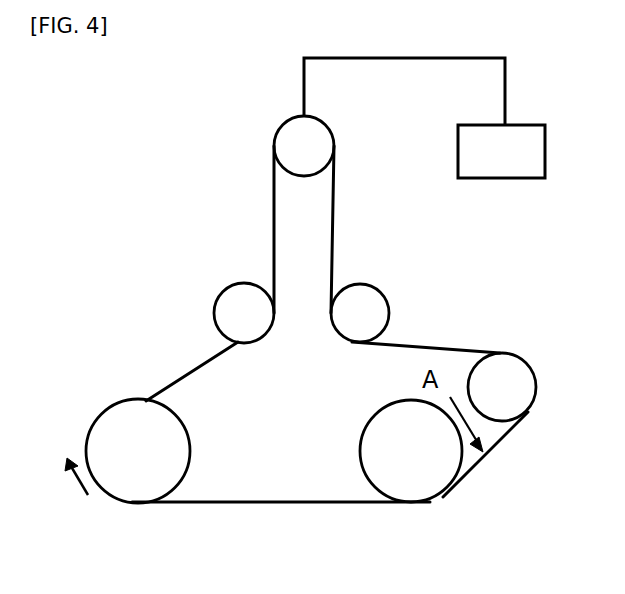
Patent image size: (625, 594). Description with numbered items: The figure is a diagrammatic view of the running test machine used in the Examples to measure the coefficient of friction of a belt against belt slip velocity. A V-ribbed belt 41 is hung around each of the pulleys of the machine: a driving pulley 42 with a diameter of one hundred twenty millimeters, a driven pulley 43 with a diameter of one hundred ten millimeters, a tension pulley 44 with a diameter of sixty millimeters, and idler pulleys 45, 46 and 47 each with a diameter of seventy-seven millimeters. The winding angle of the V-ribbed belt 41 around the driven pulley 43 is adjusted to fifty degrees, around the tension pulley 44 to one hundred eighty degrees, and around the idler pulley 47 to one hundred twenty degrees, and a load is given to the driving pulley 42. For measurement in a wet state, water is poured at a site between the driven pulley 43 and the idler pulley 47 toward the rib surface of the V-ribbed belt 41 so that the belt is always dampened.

The V-ribbed belt 41 is at (194, 373).
The driving pulley 42 is at (138, 487).
The driven pulley 43 is at (388, 457).
The tension pulley 44 is at (299, 142).
The idler pulley 45 is at (236, 312).
The idler pulley 46 is at (363, 315).
The idler pulley 47 is at (508, 395).